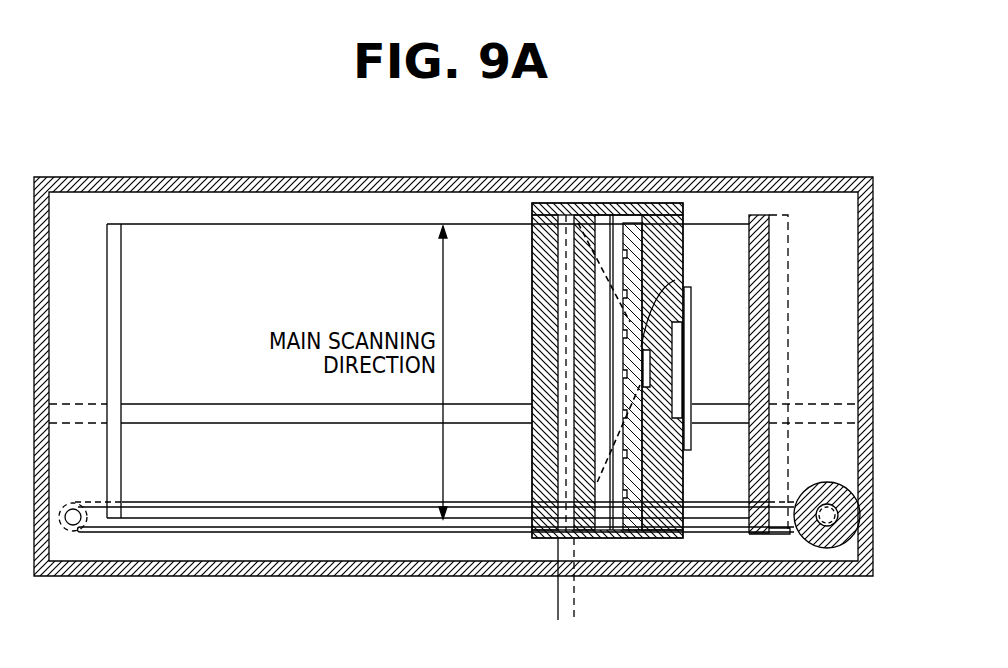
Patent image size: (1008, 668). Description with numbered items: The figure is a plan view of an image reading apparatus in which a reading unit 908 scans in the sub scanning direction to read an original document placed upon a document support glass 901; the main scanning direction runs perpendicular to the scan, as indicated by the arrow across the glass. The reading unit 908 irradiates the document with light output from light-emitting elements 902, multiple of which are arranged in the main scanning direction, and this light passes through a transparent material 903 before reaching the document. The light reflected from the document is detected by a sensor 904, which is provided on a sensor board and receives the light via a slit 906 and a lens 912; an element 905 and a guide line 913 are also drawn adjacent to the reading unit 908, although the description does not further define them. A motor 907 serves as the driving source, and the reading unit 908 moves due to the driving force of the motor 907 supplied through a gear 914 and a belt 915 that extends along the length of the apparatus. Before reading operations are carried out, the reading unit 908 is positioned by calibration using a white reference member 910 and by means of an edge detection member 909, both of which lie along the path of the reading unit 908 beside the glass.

The document support glass 901 is at (241, 224).
The light-emitting elements 902 is at (683, 222).
The transparent material 903 is at (598, 216).
The sensor 904 is at (690, 345).
The lens array 905 is at (693, 433).
The slit 906 is at (556, 455).
The motor 907 is at (818, 482).
The reading unit 908 is at (599, 374).
The edge detection member 909 is at (770, 252).
The white reference member 910 is at (777, 313).
The lens 912 is at (680, 281).
The guide line 913 is at (818, 400).
The gear 914 is at (830, 551).
The belt 915 is at (783, 535).